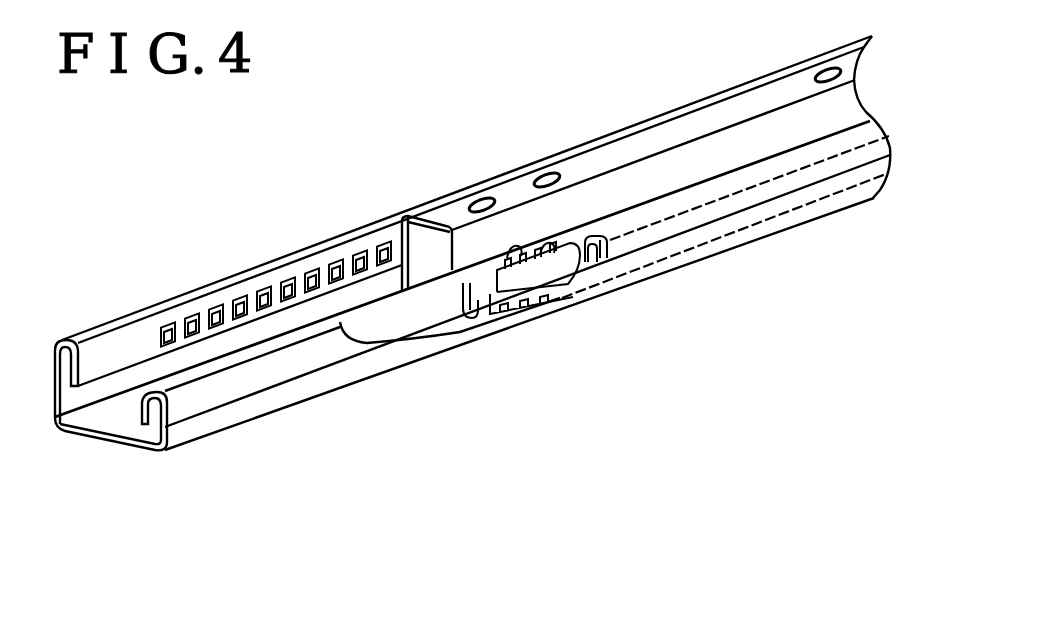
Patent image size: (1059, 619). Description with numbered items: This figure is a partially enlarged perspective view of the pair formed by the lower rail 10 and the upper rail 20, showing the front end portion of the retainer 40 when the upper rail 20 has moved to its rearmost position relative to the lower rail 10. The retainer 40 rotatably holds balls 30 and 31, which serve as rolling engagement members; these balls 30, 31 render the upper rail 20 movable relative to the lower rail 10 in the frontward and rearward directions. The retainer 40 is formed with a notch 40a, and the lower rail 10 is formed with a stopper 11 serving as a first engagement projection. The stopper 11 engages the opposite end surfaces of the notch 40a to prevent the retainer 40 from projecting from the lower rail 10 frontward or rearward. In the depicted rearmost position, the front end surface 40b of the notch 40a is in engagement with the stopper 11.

The lower rail 10 is at (296, 392).
The upper rail 20 is at (714, 110).
The ball 30 is at (517, 243).
The ball 31 is at (518, 326).
The retainer 40 is at (573, 284).
The notch 40a is at (745, 195).
The front end surface 40b is at (604, 242).
The stopper 11 is at (601, 263).